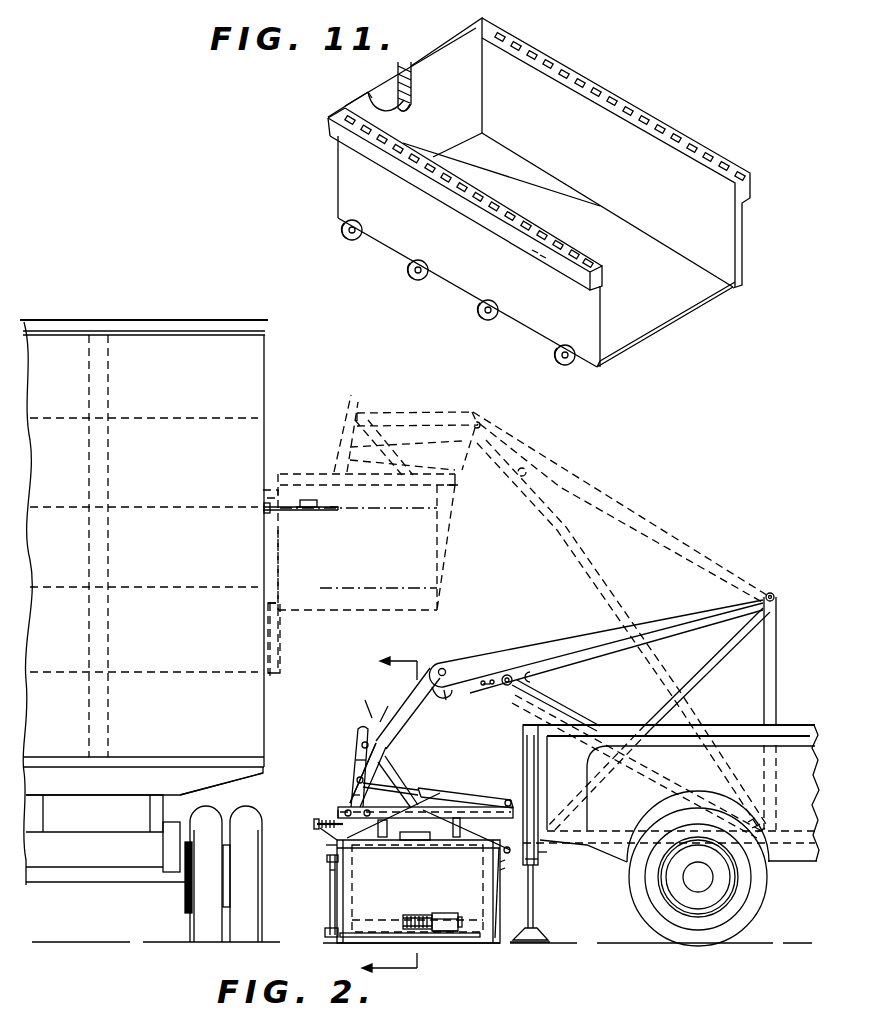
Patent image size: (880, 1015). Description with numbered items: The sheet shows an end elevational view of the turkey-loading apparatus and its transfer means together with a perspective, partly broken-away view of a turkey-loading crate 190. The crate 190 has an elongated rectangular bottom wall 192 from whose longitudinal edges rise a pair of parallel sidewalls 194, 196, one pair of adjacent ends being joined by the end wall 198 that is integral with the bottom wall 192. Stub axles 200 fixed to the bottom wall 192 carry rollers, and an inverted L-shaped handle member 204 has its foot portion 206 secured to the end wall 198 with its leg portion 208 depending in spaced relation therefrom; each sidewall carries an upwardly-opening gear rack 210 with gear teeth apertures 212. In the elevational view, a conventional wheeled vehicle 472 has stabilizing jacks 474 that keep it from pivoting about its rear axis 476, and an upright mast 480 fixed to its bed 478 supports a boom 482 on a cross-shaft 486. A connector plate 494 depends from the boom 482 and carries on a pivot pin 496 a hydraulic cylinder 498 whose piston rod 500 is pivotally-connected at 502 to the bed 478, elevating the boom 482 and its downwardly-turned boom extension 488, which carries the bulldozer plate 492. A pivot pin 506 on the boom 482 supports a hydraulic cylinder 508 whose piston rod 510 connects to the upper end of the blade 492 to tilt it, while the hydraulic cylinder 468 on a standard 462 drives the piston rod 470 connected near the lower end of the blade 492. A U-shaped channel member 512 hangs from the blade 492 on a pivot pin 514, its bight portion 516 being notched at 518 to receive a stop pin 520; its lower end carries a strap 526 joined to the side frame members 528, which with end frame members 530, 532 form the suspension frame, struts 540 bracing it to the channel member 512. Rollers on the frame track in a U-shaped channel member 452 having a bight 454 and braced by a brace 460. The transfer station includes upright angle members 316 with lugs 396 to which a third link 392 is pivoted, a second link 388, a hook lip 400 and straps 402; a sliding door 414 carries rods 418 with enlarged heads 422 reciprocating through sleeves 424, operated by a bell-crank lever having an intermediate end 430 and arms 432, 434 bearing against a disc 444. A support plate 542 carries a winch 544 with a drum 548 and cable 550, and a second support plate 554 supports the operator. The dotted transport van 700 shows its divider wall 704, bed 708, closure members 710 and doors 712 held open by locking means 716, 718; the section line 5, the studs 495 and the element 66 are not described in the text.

In FIG. 11, the turkey-loading crate 190 is at (648, 94).
In FIG. 11, the bottom wall 192 is at (672, 318).
In FIG. 11, the sidewall 194 is at (742, 232).
In FIG. 11, the sidewall 196 is at (538, 330).
In FIG. 11, the end wall 198 is at (466, 140).
In FIG. 11, the stub axles 200 is at (490, 315).
In FIG. 11, the inverted L-shaped handle member 204 is at (392, 75).
In FIG. 11, the foot portion 206 is at (413, 96).
In FIG. 11, the leg portion 208 is at (404, 111).
In FIG. 11, the gear rack 210 is at (690, 145).
In FIG. 11, the gear teeth apertures 212 is at (726, 161).
In FIG. 2, the vehicle van portion 700 is at (255, 418).
In FIG. 2, the vertical divider wall 704 is at (108, 569).
In FIG. 2, the bed 708 is at (232, 758).
In FIG. 2, the horizontal closure member 710 is at (150, 510).
In FIG. 2, the door 712 is at (336, 513).
In FIG. 2, the releasable locking means 716 is at (306, 502).
In FIG. 2, the releasable locking means 718 is at (300, 512).
In FIG. 2, the door 414 is at (282, 646).
In FIG. 2, the rods 418 is at (280, 553).
In FIG. 2, the cylindrical disc 444 is at (264, 494).
In FIG. 2, the bight 454 is at (459, 486).
In FIG. 2, the brace 460 is at (448, 538).
In FIG. 2, the hydraulic cylinder 468 is at (433, 463).
In FIG. 2, the boom 482 is at (630, 506).
In FIG. 2, the cross-shaft 486 is at (775, 598).
In FIG. 2, the boom extension 488 is at (432, 412).
In FIG. 2, the hydraulic cylinder 498 is at (611, 600).
In FIG. 2, the pivot pin 506 is at (445, 668).
In FIG. 2, the hydraulic cylinder 508 is at (398, 412).
In FIG. 2, the piston rod 510 is at (347, 437).
In FIG. 2, the pivot pin 496 is at (515, 663).
In FIG. 2, the strap 526 is at (533, 677).
In FIG. 2, the strut 495 is at (526, 700).
In FIG. 2, the connector plate 494 is at (482, 690).
In FIG. 2, the side frame members 528 is at (505, 686).
In FIG. 2, the end frame member 530 is at (441, 702).
In FIG. 2, the end frame member 532 is at (459, 701).
In FIG. 2, the bulldozer plate 492 is at (361, 732).
In FIG. 2, the pivot pin 514 is at (361, 746).
In FIG. 2, the U-shaped channel member 512 is at (357, 762).
In FIG. 2, the stop pin 520 is at (356, 779).
In FIG. 2, the bight portion 516 is at (357, 792).
In FIG. 2, the notch 518 is at (388, 764).
In FIG. 2, the struts 540 is at (390, 766).
In FIG. 2, the piston rod 470 is at (376, 789).
In FIG. 2, the second link 388 is at (510, 799).
In FIG. 2, the U-shaped channel member 452 is at (338, 810).
In FIG. 2, the strap 402 is at (378, 840).
In FIG. 2, the upwardly-turned lip 400 is at (446, 840).
In FIG. 2, the standard 462 is at (504, 849).
In FIG. 2, the second horizontal support plate 554 is at (378, 940).
In FIG. 2, the drum 548 is at (406, 914).
In FIG. 2, the cable 550 is at (420, 913).
In FIG. 2, the winch 544 is at (444, 912).
In FIG. 2, the cylinder end 66 is at (437, 917).
In FIG. 2, the support plate 542 is at (452, 933).
In FIG. 2, the arm 434 is at (326, 857).
In FIG. 2, the sleeve 424 is at (325, 935).
In FIG. 2, the arm 432 is at (319, 832).
In FIG. 2, the intermediate end 430 is at (326, 847).
In FIG. 2, the enlarged head 422 is at (328, 870).
In FIG. 2, the wheeled vehicle 472 is at (727, 719).
In FIG. 2, the upright mast 480 is at (777, 696).
In FIG. 2, the piston rod 500 is at (722, 772).
In FIG. 2, the pivotal connection 502 is at (771, 823).
In FIG. 2, the rear axis 476 is at (690, 880).
In FIG. 2, the leveling or stabilizing jacks 474 is at (538, 860).
In FIG. 2, the bed 478 is at (581, 857).
In FIG. 2, the upright L-shaped angle member 316 is at (498, 912).
In FIG. 2, the third link 392 is at (516, 870).
In FIG. 2, the lug 396 is at (516, 880).
In FIG. 2, the section line 5 is at (389, 807).